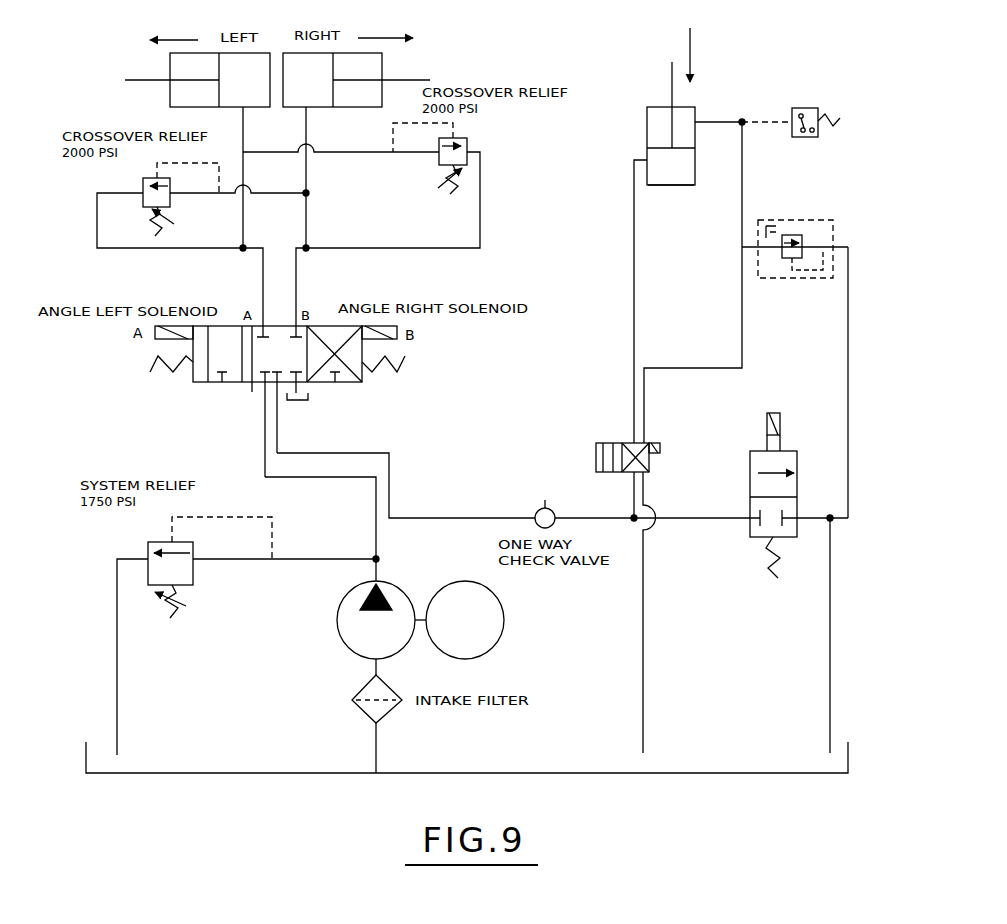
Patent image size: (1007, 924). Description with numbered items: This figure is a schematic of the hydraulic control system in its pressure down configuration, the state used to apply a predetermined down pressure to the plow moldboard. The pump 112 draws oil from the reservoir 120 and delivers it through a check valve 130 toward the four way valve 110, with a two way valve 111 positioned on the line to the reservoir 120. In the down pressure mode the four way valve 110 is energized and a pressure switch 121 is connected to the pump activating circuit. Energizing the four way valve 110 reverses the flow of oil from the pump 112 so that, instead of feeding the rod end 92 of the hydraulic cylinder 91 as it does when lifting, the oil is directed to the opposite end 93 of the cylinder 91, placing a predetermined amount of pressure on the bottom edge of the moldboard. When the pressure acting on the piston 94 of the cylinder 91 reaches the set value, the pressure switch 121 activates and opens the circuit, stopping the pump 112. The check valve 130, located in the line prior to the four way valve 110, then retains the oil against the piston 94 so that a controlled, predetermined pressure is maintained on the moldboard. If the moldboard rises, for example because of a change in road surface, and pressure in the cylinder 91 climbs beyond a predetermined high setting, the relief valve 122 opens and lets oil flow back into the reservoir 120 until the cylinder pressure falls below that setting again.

The hydraulic cylinder 91 is at (647, 120).
The rod end 92 is at (675, 177).
The opposite end 93 is at (684, 117).
The piston 94 is at (656, 147).
The four way valve 110 is at (590, 452).
The two way valve 111 is at (800, 472).
The pump 112 is at (337, 632).
The reservoir 120 is at (535, 774).
The pressure switch 121 is at (800, 140).
The relief valve 122 is at (790, 280).
The check valve 130 is at (538, 511).